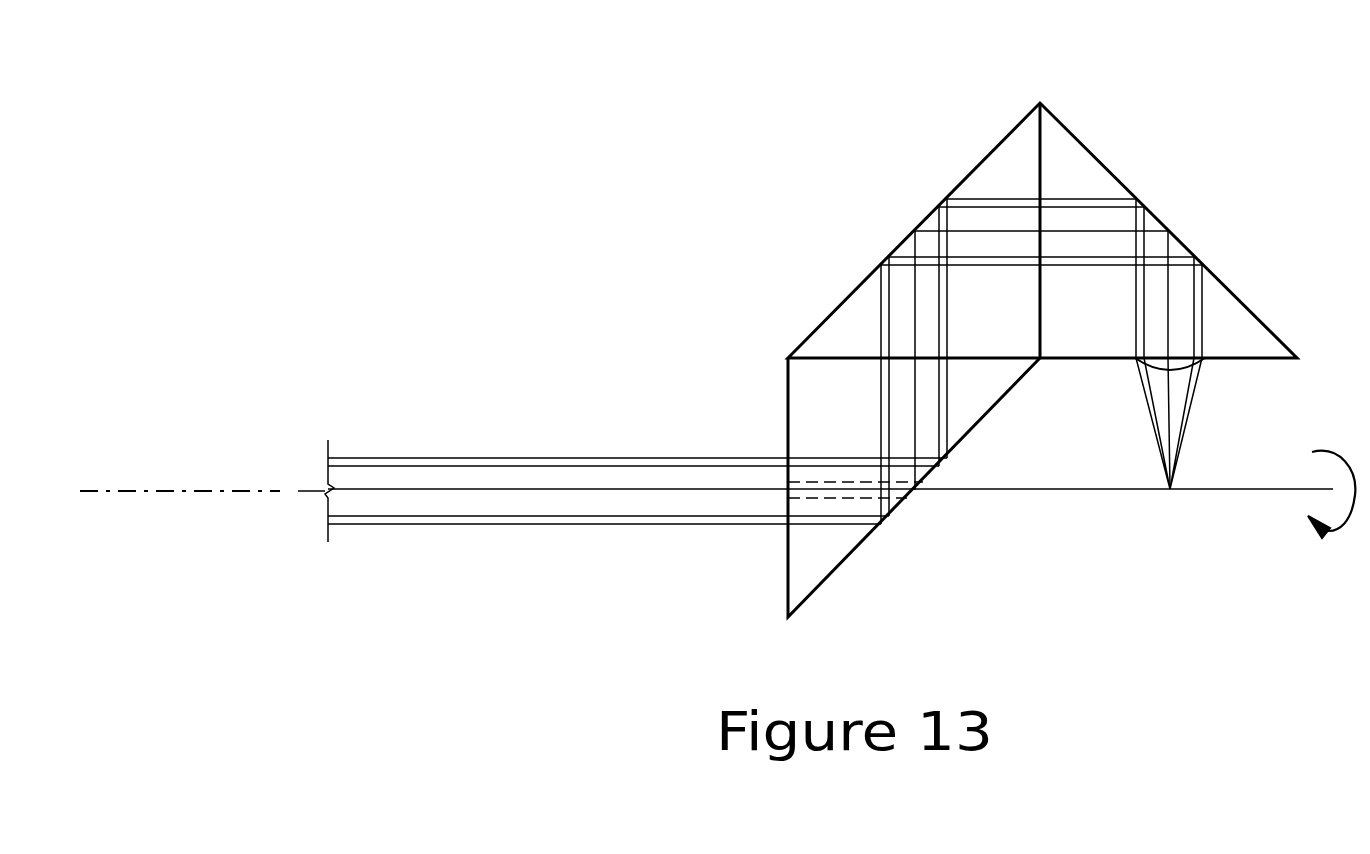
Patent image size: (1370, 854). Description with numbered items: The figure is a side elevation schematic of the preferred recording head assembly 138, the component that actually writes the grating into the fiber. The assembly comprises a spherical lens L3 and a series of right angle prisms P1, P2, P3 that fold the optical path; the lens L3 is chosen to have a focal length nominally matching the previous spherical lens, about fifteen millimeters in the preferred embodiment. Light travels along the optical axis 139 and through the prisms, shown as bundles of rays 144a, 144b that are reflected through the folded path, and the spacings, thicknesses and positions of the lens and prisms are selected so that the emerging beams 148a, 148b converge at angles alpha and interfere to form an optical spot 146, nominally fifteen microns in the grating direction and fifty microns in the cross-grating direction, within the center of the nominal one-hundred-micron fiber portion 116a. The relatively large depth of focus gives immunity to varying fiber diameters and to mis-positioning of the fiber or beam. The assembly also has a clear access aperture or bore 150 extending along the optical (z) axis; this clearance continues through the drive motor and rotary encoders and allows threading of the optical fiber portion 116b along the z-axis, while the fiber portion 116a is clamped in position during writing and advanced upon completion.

The recording head assembly 138 is at (1072, 136).
The optical axis 139 is at (108, 491).
The fiber portion 116a is at (1118, 490).
The optical fiber portion 116b is at (375, 491).
The lower beam boundary ray 144a is at (603, 525).
The upper beam boundary ray 144b is at (603, 458).
The optical spot 146 is at (1177, 481).
The beam 148a is at (1183, 443).
The beam 148b is at (1150, 415).
The clear access aperture or bore 150 is at (910, 496).
The right angle prism P1 is at (996, 409).
The right angle prism P2 is at (987, 155).
The right angle prism P3 is at (1093, 157).
The spherical lens L3 is at (1205, 362).
The convergence angle alpha is at (1168, 398).